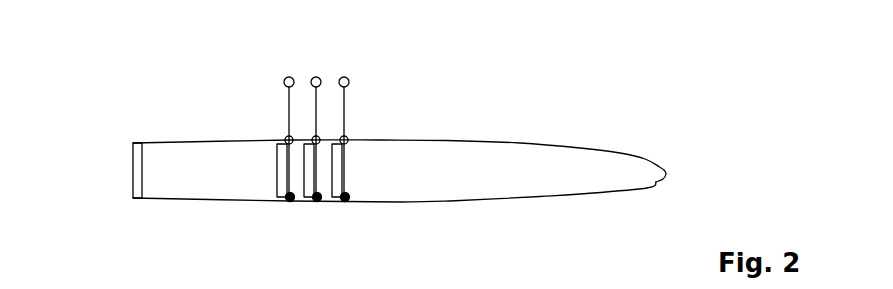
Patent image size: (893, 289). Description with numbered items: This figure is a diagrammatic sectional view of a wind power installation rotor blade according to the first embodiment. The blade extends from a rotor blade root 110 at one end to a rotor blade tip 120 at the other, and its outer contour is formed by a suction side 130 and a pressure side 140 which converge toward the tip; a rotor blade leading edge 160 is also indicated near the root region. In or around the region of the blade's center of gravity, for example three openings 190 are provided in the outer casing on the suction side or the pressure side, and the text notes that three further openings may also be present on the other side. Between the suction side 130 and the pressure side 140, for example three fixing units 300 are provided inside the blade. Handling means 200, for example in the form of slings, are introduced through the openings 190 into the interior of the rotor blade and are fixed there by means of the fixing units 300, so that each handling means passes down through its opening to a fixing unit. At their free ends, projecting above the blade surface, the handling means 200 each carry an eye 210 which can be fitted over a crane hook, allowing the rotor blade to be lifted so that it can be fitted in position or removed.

The rotor blade root 110 is at (132, 168).
The rotor blade tip 120 is at (667, 172).
The suction side 130 is at (447, 140).
The pressure side 140 is at (448, 202).
The rotor blade leading edge 160 is at (402, 177).
The openings 190 is at (285, 138).
The handling means 200 is at (346, 110).
The eye 210 is at (348, 80).
The fixing units 300 is at (330, 203).